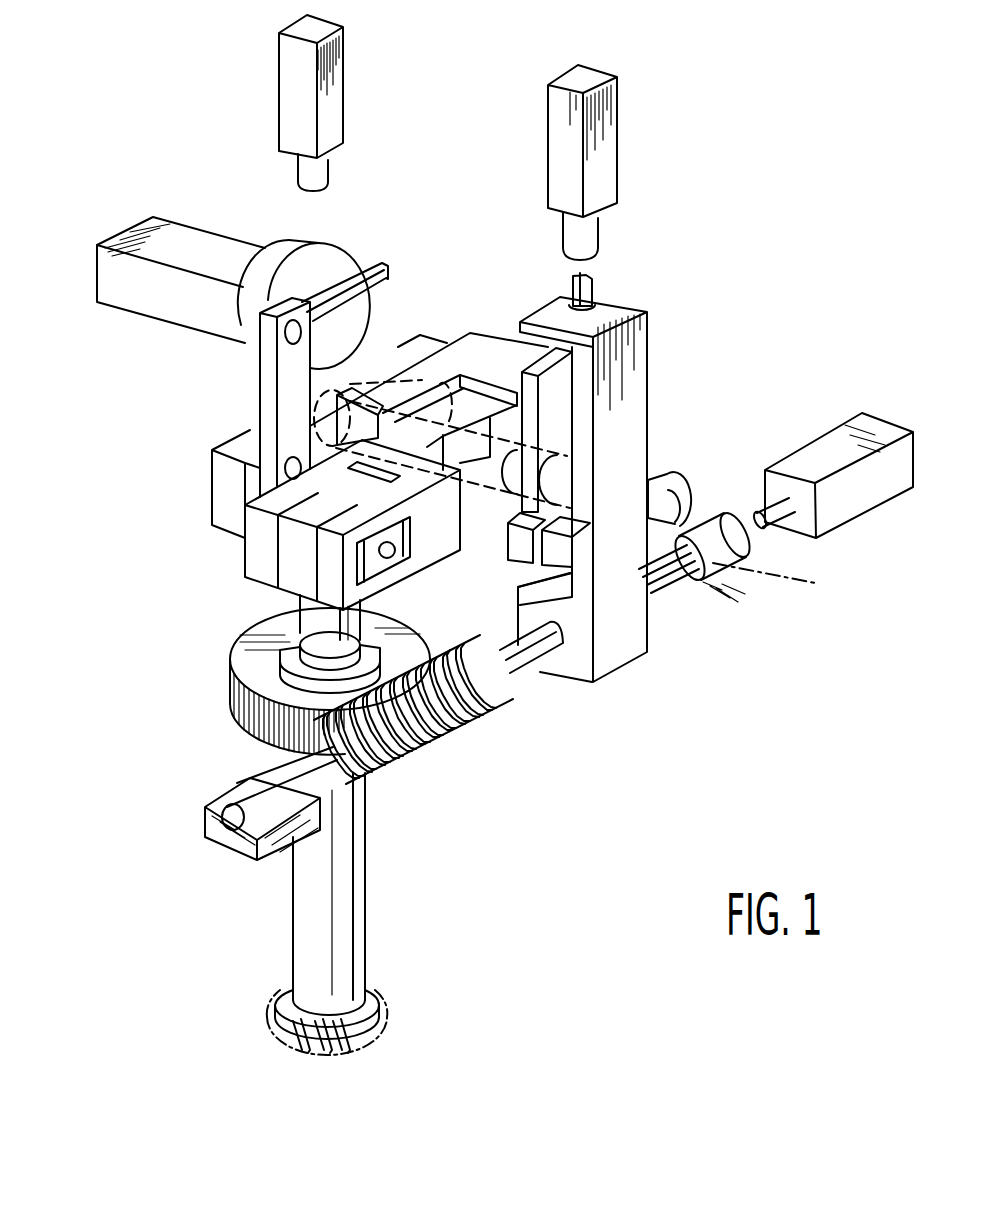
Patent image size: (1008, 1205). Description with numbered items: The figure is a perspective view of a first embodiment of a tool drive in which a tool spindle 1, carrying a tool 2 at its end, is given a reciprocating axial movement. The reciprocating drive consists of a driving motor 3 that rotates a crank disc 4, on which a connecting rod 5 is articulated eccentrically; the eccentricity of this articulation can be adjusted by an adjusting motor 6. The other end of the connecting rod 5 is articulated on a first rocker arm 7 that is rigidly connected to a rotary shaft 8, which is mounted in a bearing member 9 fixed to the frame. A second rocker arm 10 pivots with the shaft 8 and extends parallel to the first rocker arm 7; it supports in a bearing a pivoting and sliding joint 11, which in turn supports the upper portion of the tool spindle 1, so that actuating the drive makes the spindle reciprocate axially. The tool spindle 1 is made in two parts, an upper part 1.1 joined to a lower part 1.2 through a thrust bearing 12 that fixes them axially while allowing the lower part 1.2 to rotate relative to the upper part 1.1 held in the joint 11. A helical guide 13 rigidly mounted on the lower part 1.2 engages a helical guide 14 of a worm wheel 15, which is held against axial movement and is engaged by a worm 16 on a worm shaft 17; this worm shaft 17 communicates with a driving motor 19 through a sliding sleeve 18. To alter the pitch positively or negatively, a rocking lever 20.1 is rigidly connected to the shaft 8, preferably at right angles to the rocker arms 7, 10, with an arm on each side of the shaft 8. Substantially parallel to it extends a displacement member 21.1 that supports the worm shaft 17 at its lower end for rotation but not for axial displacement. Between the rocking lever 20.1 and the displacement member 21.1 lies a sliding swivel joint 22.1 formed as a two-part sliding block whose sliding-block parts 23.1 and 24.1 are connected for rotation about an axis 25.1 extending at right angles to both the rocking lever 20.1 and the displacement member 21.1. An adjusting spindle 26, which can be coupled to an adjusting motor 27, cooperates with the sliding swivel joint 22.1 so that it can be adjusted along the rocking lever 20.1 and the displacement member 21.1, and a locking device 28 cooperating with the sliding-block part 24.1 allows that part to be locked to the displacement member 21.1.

The tool spindle 1 is at (305, 932).
The upper part 1.1 is at (293, 613).
The lower part 1.2 is at (366, 830).
The tool 2 is at (382, 1013).
The driving motor 3 is at (212, 230).
The crank disc 4 is at (337, 265).
The connecting rod 5 is at (267, 390).
The adjusting motor 6 is at (332, 125).
The first rocker arm 7 is at (223, 463).
The rotary shaft 8 is at (442, 386).
The bearing member 9 is at (490, 350).
The second rocker arm 10 is at (420, 532).
The pivoting and sliding joint 11 is at (373, 567).
The thrust bearing 12 is at (306, 628).
The helical guide 13 is at (297, 652).
The helical guide 14 is at (280, 697).
The worm wheel 15 is at (413, 652).
The worm 16 is at (447, 742).
The worm shaft 17 is at (523, 675).
The sliding sleeve 18 is at (730, 573).
The driving motor 19 is at (887, 468).
The rocking lever 20.1 is at (560, 413).
The displacement member 21.1 is at (577, 660).
The sliding swivel joint 22.1 is at (560, 557).
The sliding-block part 23.1 is at (520, 555).
The sliding-block part 24.1 is at (570, 597).
The axis of rotation 25.1 is at (812, 581).
The adjusting spindle 26 is at (592, 290).
The adjusting motor 27 is at (603, 177).
The locking device 28 is at (682, 492).